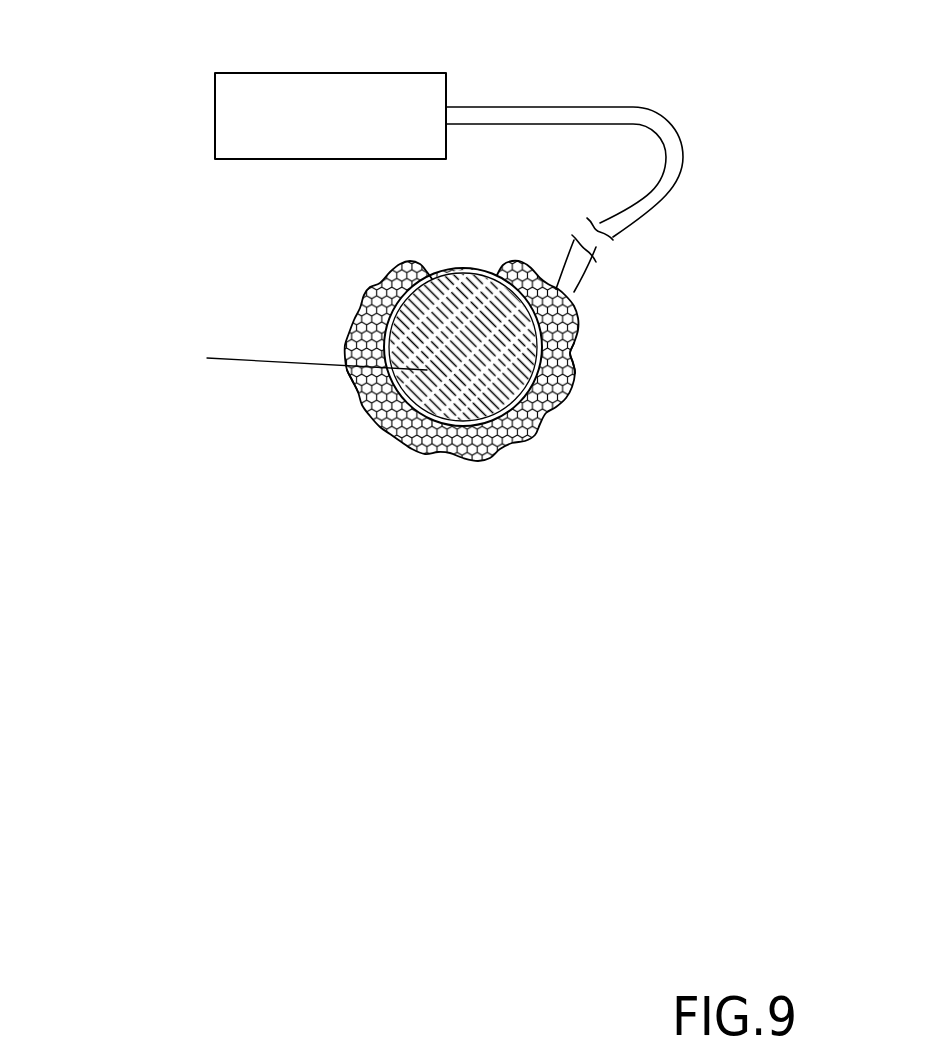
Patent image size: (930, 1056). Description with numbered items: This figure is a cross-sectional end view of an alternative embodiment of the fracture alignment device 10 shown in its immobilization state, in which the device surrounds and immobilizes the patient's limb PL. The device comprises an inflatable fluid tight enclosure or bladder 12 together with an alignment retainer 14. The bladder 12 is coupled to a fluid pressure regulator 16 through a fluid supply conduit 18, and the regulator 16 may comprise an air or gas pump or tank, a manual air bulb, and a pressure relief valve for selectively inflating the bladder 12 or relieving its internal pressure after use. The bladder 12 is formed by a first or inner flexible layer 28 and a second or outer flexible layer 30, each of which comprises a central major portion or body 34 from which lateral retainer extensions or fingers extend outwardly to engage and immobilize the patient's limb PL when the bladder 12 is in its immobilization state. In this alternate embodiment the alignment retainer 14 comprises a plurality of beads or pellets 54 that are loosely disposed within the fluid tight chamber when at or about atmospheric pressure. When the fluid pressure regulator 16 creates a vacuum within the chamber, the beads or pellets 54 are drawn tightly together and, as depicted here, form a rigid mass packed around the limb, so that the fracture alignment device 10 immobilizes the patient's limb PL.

The fracture alignment device 10 is at (283, 522).
The inflatable fluid tight enclosure or bladder 12 is at (410, 472).
The alignment retainer 14 is at (492, 413).
The fluid pressure regulator 16 is at (215, 92).
The fluid supply conduit 18 is at (665, 172).
The first or inner flexible layer 28 is at (390, 280).
The second or outer flexible layer 30 is at (348, 338).
The central major portion or body 34 is at (560, 358).
The beads or pellets 54 is at (372, 405).
The patient's limb PL is at (294, 362).